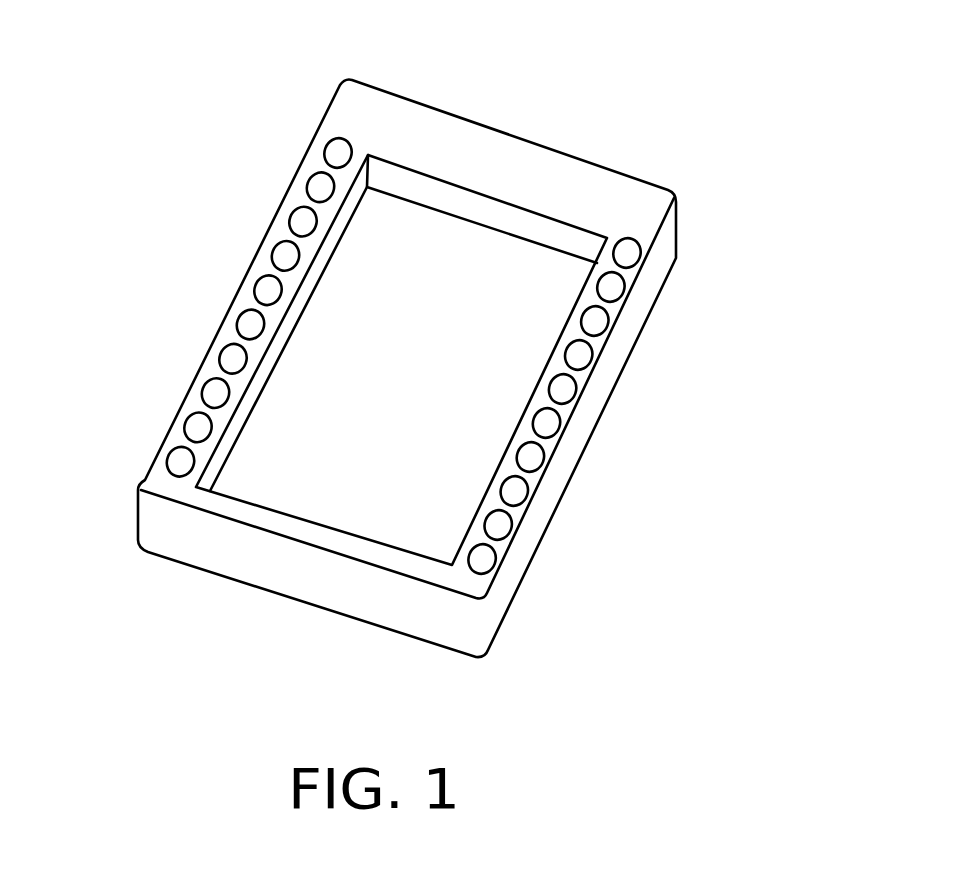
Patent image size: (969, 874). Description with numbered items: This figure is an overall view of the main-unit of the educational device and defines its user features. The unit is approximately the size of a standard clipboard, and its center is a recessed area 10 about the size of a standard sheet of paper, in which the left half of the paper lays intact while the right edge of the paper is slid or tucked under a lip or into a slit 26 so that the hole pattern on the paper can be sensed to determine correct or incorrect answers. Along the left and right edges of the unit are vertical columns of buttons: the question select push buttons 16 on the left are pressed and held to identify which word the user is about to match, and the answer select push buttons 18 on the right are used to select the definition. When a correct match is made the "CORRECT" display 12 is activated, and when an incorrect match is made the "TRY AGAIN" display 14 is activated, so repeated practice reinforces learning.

The recessed area 10 is at (333, 457).
The "CORRECT" display 12 is at (428, 120).
The "TRY AGAIN" display 14 is at (583, 172).
The question select push button 16 is at (340, 150).
The answer select push button 18 is at (635, 257).
The slit for inserting paper 26 is at (477, 500).